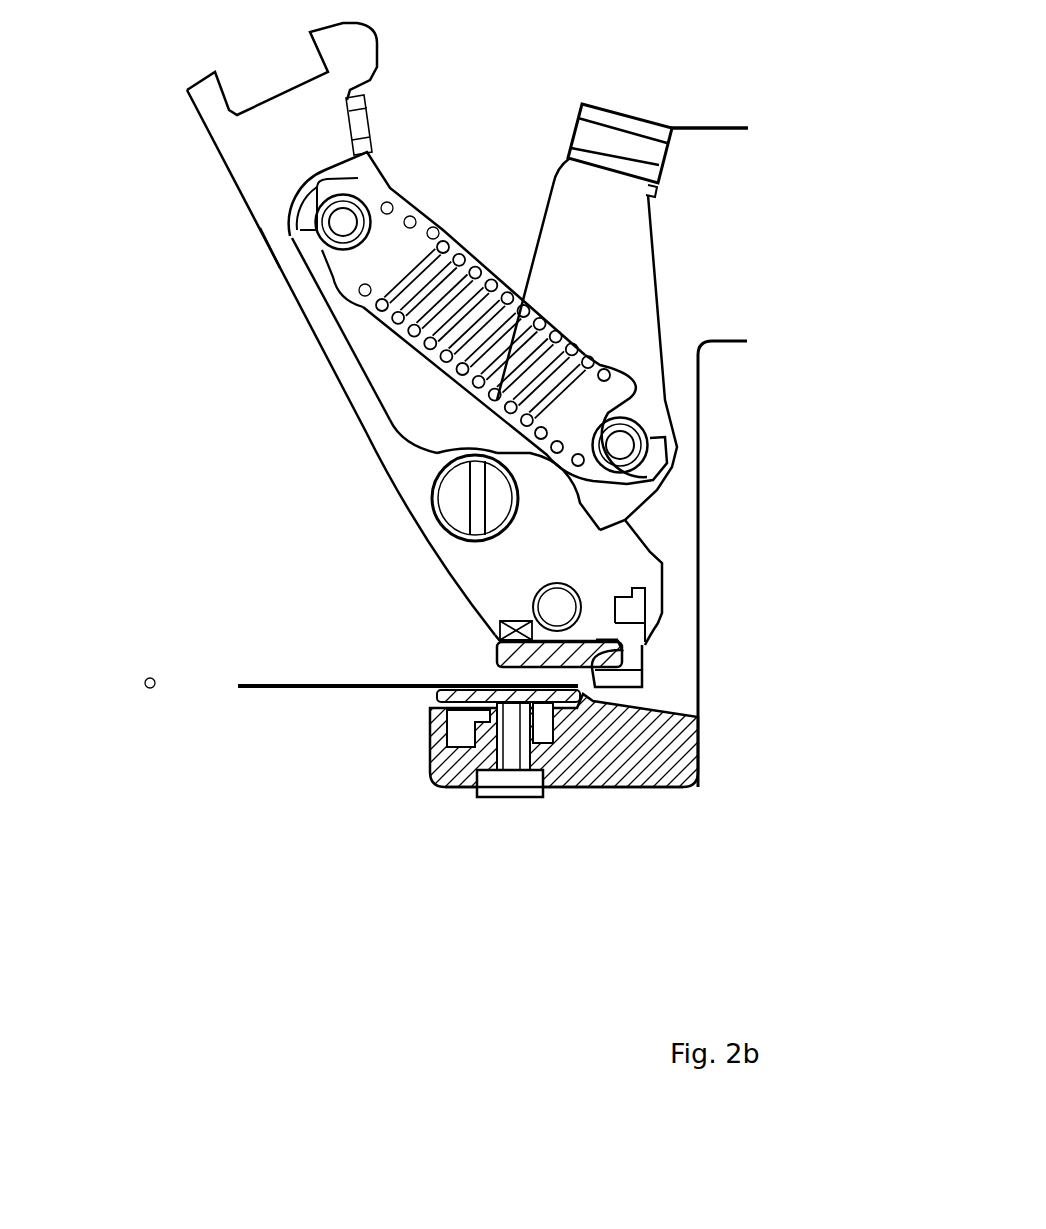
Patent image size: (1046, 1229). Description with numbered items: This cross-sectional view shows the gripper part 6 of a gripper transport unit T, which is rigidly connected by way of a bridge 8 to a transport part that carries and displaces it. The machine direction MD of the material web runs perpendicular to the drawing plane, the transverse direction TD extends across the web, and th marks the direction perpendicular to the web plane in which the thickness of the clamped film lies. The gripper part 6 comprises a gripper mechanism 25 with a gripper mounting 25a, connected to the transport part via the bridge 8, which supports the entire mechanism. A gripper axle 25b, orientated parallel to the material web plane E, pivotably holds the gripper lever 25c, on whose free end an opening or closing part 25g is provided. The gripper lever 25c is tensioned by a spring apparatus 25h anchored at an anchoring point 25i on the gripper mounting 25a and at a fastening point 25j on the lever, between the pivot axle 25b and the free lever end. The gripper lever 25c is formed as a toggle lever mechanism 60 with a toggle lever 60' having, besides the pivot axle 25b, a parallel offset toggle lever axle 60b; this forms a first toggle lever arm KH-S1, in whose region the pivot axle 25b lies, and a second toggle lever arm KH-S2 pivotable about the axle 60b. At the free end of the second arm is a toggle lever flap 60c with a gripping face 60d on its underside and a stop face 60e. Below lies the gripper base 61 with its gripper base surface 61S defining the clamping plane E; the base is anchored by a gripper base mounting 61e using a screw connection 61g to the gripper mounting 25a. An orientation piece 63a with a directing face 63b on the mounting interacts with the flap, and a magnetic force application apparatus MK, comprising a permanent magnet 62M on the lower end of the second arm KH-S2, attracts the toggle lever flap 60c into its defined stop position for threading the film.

The gripper mechanism 25 is at (500, 143).
The opening or closing part 25g is at (208, 135).
The fastening point 25j is at (348, 218).
The spring apparatus 25h is at (530, 371).
The anchoring point 25i is at (622, 446).
The gripper mounting 25a is at (592, 326).
The gripper axle 25b is at (470, 497).
The gripper lever 25c is at (354, 355).
The toggle lever 60' is at (413, 436).
The gripper part 6 is at (489, 219).
The gripper transport unit T is at (766, 212).
The bridge 8 is at (728, 273).
The first toggle lever arm KH-S1 is at (302, 312).
The second toggle lever arm KH-S2 is at (613, 641).
The toggle lever mechanism 60 is at (346, 423).
The toggle lever axle 60b is at (552, 605).
The toggle lever flap 60c is at (512, 653).
The gripping face 60d is at (600, 673).
The stop face 60e is at (604, 644).
The permanent magnet 62M is at (510, 628).
The orientation piece 63a is at (634, 600).
The directing face 63b is at (650, 628).
The force application apparatus MK is at (413, 617).
The gripper base 61 is at (600, 703).
The gripper base surface 61S is at (432, 697).
The gripper base mounting 61e is at (472, 738).
The screw connection 61g is at (565, 784).
The clamping plane E is at (408, 654).
The thickness direction th is at (150, 678).
The transverse direction TD is at (145, 683).
The machine direction MD is at (150, 683).